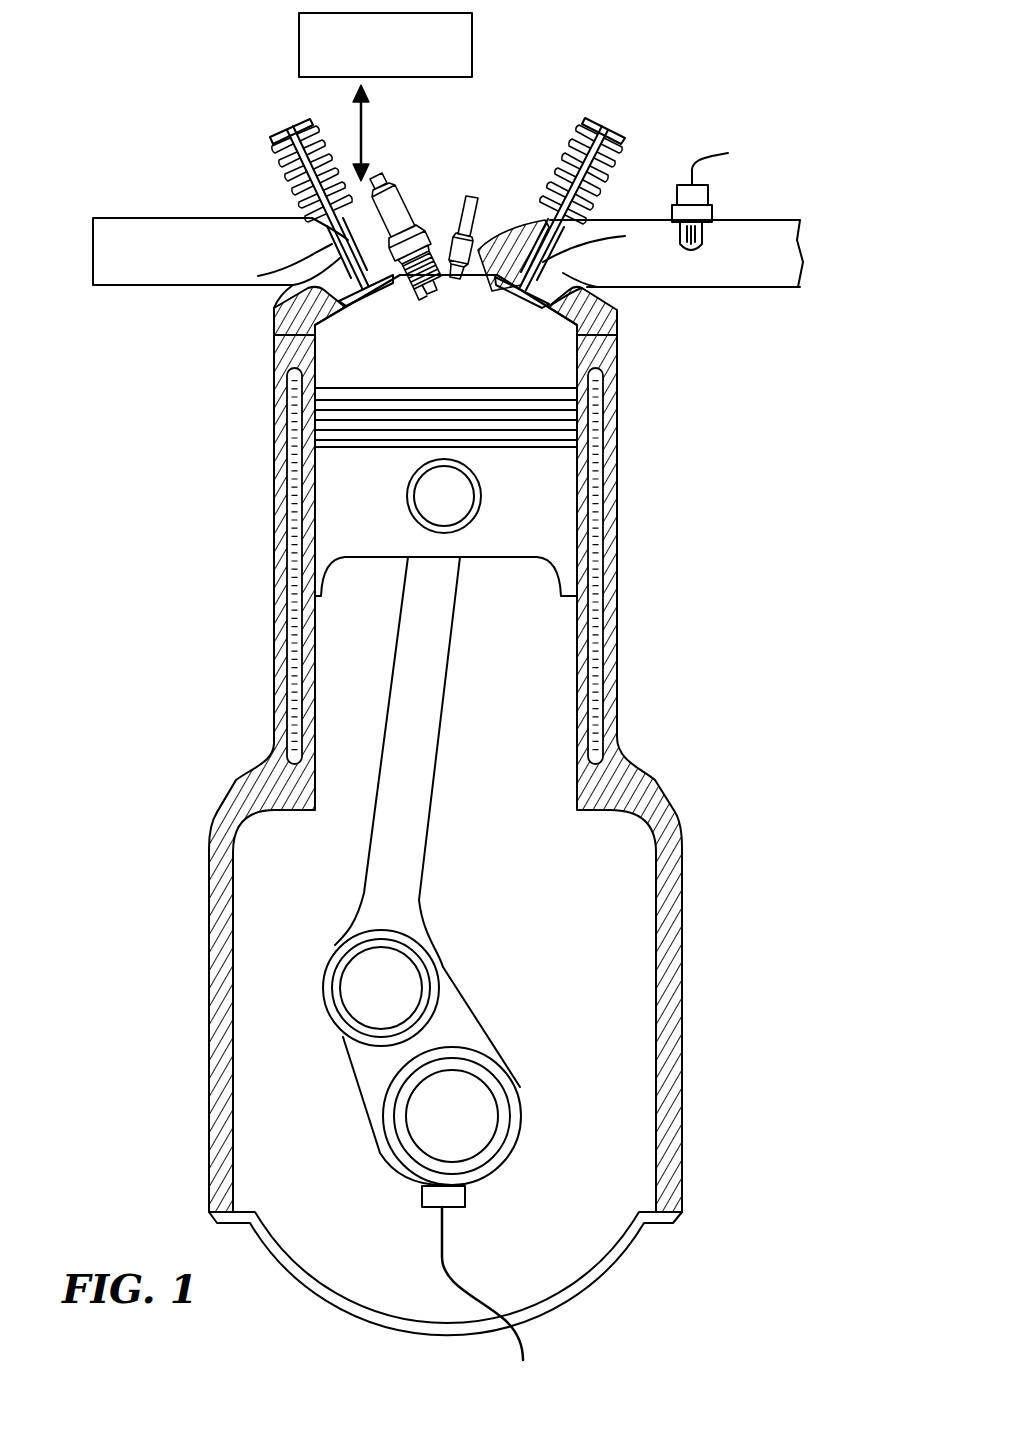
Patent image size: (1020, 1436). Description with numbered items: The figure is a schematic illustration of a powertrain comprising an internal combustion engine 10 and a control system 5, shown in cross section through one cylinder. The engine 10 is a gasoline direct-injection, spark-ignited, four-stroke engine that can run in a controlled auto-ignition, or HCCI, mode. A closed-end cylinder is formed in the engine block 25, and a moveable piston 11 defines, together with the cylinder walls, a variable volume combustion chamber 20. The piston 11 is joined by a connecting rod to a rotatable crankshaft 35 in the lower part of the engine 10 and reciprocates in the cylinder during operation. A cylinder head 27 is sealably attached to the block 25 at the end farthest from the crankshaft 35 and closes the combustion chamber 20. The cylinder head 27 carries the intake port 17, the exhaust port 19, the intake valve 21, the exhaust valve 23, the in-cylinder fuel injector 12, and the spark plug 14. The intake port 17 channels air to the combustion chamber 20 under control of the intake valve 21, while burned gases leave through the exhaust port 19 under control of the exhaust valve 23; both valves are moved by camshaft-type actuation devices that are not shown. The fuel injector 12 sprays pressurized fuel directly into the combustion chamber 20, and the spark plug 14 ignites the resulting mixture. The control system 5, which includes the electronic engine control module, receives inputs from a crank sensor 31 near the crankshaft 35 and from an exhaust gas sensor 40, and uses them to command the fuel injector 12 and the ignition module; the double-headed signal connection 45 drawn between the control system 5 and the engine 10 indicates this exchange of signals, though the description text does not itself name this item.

The control system 5 is at (470, 28).
The internal combustion engine 10 is at (178, 443).
The piston 11 is at (541, 500).
The in-cylinder fuel injector 12 is at (466, 205).
The spark plug 14 is at (393, 200).
The intake port 17 is at (292, 286).
The exhaust port 19 is at (582, 289).
The variable volume combustion chamber 20 is at (474, 356).
The intake valve 21 is at (328, 250).
The exhaust valve 23 is at (546, 258).
The engine block 25 is at (610, 452).
The cylinder head 27 is at (600, 322).
The crank sensor 31 is at (422, 1200).
The crankshaft 35 is at (383, 1108).
The exhaust gas sensor 40 is at (709, 205).
The signal line 45 is at (356, 132).